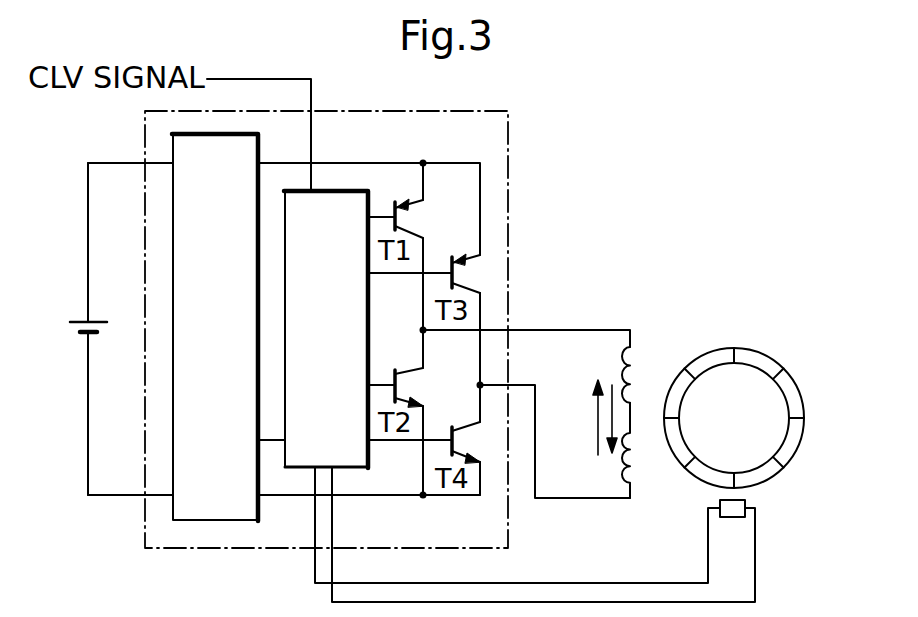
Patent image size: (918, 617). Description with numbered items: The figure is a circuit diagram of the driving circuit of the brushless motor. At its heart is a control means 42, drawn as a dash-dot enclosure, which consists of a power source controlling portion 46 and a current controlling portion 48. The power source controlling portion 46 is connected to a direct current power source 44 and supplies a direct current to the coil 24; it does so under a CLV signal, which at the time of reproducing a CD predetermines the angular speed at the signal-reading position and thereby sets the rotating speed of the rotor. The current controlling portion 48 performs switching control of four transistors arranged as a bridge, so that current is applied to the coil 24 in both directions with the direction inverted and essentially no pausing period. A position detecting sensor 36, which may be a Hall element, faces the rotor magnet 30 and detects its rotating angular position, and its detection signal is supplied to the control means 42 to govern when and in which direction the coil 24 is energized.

The coil 24 is at (638, 380).
The rotor magnet 30 is at (755, 358).
The position detecting sensor 36 is at (717, 500).
The control means 42 is at (509, 194).
The direct current power source 44 is at (84, 320).
The power source controlling portion 46 is at (202, 521).
The current controlling portion 48 is at (341, 188).